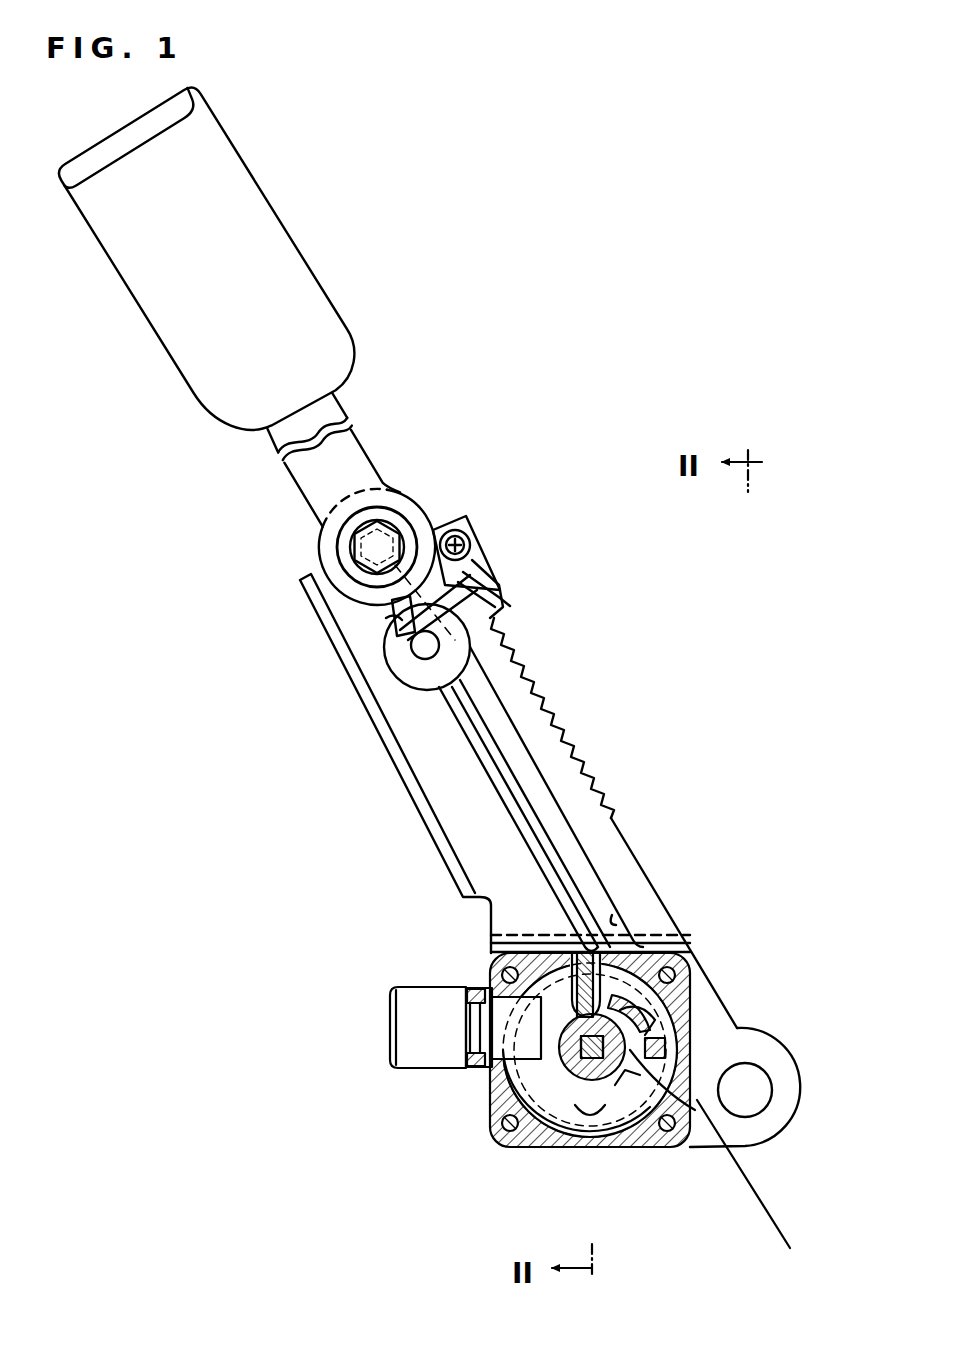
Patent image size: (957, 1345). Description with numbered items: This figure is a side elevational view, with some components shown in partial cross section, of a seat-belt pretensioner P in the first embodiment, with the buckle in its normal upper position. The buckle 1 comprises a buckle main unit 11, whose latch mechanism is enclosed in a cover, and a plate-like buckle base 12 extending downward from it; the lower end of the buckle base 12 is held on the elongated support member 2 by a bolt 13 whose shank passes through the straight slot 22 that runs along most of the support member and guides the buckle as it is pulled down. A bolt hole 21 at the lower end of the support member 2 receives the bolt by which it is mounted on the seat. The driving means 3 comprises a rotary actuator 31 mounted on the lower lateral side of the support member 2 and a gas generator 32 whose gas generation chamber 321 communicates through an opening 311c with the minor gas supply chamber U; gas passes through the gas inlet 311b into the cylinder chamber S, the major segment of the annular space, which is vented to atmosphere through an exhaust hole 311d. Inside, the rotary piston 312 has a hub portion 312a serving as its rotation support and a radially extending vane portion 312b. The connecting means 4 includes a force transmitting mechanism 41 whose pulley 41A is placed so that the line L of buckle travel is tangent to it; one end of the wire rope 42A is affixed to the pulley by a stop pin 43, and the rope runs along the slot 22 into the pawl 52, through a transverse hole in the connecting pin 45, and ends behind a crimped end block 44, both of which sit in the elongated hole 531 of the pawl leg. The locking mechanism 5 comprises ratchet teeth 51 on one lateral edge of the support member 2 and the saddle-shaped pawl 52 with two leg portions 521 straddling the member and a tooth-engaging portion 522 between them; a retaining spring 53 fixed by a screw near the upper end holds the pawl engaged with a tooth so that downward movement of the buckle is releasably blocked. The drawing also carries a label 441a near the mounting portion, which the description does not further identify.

The buckle 1 is at (355, 334).
The buckle main unit 11 is at (275, 240).
The buckle base 12 is at (360, 464).
The bolt 13 is at (355, 552).
The pretensioner P is at (458, 425).
The support member 2 is at (372, 738).
The bolt hole 21 is at (745, 1068).
The slot 22 is at (620, 918).
The driving means 3 is at (483, 1122).
The rotary actuator 31 is at (555, 1148).
The gas inlet 311b is at (528, 1028).
The opening 311c is at (495, 1037).
The exhaust hole 311d is at (490, 1100).
The rotary piston 312 is at (570, 1053).
The hub portion 312a is at (585, 1120).
The vane portion 312b is at (595, 923).
The gas generator 32 is at (415, 990).
The gas generation chamber 321 is at (468, 1020).
The connecting means 4 is at (598, 903).
The force transmitting mechanism 41 is at (622, 1130).
The pulley 41A is at (598, 1120).
The wire rope 42A is at (525, 795).
The stop pin 43 is at (680, 1050).
The end block 44 is at (428, 655).
The cable connecting portion 441a is at (697, 1100).
The connecting pin 45 is at (470, 646).
The locking mechanism 5 is at (520, 618).
The ratchet teeth 51 is at (555, 720).
The pawl 52 is at (392, 628).
The leg portions 521 is at (372, 627).
The tooth-engaging portion 522 is at (512, 585).
The retaining spring 53 is at (485, 540).
The elongated hole 531 is at (393, 640).
The cylinder chamber S is at (525, 1148).
The gas supply chamber U is at (490, 985).
The line L is at (750, 1186).